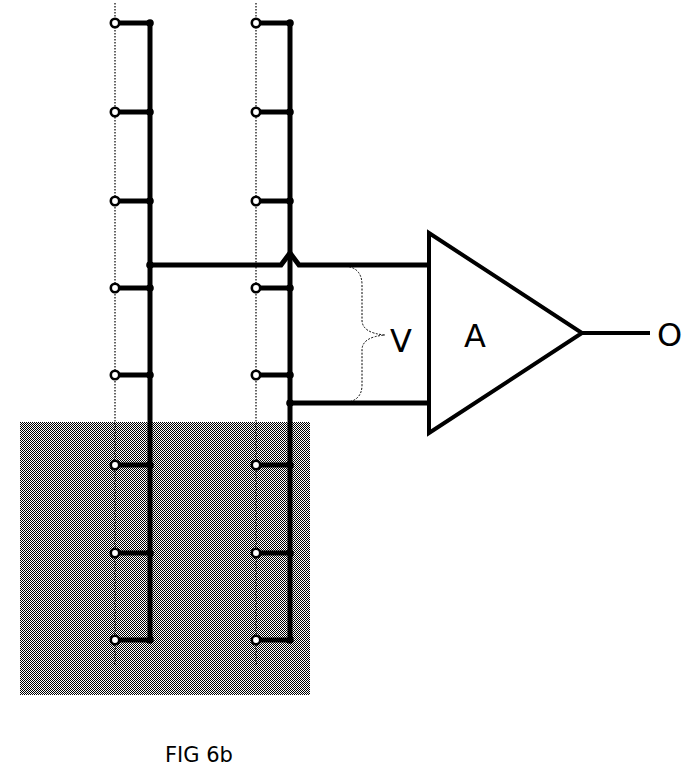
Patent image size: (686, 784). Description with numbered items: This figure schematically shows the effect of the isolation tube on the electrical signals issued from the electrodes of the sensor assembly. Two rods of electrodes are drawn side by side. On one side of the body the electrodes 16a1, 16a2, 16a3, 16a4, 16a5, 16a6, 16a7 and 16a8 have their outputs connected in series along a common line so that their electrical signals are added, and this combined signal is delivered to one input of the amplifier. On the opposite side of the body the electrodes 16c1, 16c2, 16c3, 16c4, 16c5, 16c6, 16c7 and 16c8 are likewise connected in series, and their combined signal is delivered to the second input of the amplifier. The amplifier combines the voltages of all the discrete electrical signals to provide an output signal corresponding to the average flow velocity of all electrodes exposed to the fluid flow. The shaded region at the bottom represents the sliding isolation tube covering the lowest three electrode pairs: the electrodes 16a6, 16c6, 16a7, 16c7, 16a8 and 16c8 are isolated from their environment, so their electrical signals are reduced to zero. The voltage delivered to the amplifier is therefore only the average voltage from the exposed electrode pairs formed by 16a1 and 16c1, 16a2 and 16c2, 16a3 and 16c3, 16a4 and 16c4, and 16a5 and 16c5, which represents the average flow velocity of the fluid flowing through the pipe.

The electrode 16a1 is at (110, 23).
The electrode 16c1 is at (251, 23).
The electrode 16a2 is at (110, 112).
The electrode 16c2 is at (251, 112).
The electrode 16a3 is at (110, 201).
The electrode 16c3 is at (251, 201).
The electrode 16a4 is at (110, 288).
The electrode 16c4 is at (251, 288).
The electrode 16a5 is at (110, 375).
The electrode 16c5 is at (251, 375).
The electrode 16a6 is at (110, 465).
The electrode 16c6 is at (251, 465).
The electrode 16a7 is at (110, 553).
The electrode 16c7 is at (251, 553).
The electrode 16a8 is at (110, 640).
The electrode 16c8 is at (251, 640).